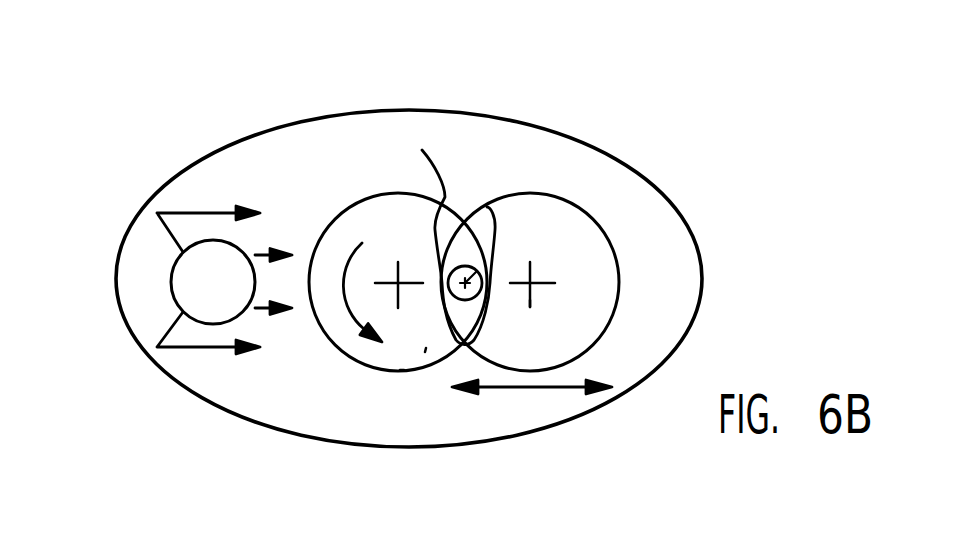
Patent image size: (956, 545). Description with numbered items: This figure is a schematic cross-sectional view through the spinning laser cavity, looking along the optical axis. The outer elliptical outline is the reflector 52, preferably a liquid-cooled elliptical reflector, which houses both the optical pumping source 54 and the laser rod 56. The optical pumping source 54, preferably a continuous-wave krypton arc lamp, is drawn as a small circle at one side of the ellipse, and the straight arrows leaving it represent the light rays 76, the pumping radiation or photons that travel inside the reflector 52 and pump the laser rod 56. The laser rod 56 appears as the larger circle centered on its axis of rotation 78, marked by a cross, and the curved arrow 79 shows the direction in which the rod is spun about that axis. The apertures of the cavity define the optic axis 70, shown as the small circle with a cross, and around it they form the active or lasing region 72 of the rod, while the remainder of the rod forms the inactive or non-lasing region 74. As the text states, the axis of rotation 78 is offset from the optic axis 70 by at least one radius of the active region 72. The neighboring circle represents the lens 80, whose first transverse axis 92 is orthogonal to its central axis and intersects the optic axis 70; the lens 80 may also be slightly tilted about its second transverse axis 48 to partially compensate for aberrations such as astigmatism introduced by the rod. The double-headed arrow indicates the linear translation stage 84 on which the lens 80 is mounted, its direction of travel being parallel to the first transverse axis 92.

The reflector 52 is at (245, 137).
The optical pumping source 54 is at (205, 290).
The light rays 76 is at (226, 276).
The axis of rotation 78 is at (398, 283).
The arrow 79 is at (343, 300).
The active region 72 is at (445, 236).
The optic axis 70 is at (487, 207).
The lens 80 is at (582, 203).
The first transverse axis 92 is at (553, 284).
The second transverse axis 48 is at (532, 302).
The linear translation stage 84 is at (553, 387).
The inactive region 74 is at (425, 352).
The laser rod 56 is at (400, 370).